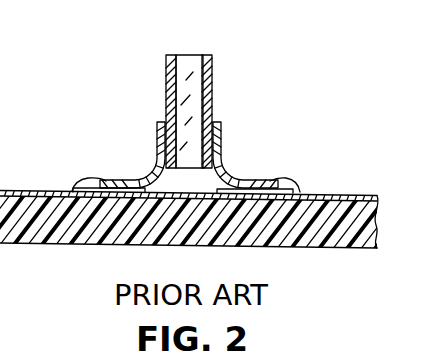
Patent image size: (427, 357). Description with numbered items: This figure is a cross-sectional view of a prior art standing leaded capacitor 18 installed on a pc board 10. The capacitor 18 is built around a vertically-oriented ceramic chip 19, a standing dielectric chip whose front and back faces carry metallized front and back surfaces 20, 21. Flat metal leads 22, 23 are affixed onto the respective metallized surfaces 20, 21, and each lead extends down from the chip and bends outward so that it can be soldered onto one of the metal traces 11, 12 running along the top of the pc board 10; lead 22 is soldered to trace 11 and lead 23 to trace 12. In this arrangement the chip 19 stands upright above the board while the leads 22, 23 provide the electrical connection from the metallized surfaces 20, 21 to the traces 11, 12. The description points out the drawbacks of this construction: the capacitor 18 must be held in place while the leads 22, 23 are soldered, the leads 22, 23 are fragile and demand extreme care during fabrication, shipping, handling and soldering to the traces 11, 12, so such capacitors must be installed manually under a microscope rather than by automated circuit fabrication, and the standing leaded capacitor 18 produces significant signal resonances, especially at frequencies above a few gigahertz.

The pc board 10 is at (80, 247).
The trace 11 is at (52, 190).
The trace 12 is at (330, 194).
The standing leaded capacitor 18 is at (116, 55).
The ceramic chip 19 is at (189, 71).
The metallized front surface 20 is at (166, 110).
The metallized back surface 21 is at (212, 100).
The flat metal lead 22 is at (150, 173).
The flat metal lead 23 is at (229, 173).